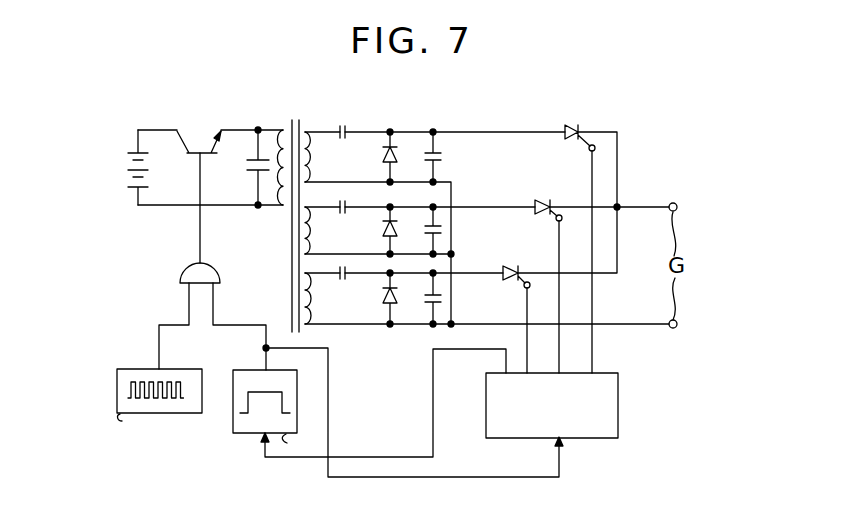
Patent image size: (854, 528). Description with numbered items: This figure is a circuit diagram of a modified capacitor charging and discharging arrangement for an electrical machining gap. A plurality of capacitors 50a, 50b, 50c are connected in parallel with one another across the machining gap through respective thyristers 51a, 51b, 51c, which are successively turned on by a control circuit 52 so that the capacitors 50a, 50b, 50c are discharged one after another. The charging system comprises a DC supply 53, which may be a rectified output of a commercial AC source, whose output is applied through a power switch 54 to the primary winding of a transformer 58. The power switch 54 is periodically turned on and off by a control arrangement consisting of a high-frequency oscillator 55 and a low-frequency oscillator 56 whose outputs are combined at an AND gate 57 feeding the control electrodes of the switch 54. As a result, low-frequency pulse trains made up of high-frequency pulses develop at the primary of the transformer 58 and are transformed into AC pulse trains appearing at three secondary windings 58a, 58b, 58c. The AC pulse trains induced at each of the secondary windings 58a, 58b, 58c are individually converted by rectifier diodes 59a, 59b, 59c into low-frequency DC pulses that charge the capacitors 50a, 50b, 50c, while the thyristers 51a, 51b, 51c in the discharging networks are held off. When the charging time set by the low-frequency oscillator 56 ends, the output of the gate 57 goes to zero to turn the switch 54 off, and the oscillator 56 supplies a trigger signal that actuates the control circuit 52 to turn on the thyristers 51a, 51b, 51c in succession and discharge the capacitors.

The capacitor 50a is at (442, 157).
The capacitor 50b is at (441, 230).
The capacitor 50c is at (441, 298).
The thyrister 51a is at (576, 126).
The thyrister 51b is at (541, 201).
The thyrister 51c is at (516, 267).
The control circuit 52 is at (619, 412).
The DC supply 53 is at (150, 171).
The power switch 54 is at (204, 128).
The high-frequency oscillator 55 is at (176, 414).
The low-frequency oscillator 56 is at (244, 435).
The AND gate 57 is at (222, 278).
The transformer 58 is at (296, 127).
The secondary winding 58a is at (313, 155).
The secondary winding 58b is at (309, 225).
The secondary winding 58c is at (307, 312).
The rectifier diode 59a is at (395, 146).
The rectifier diode 59b is at (394, 222).
The rectifier diode 59c is at (384, 293).